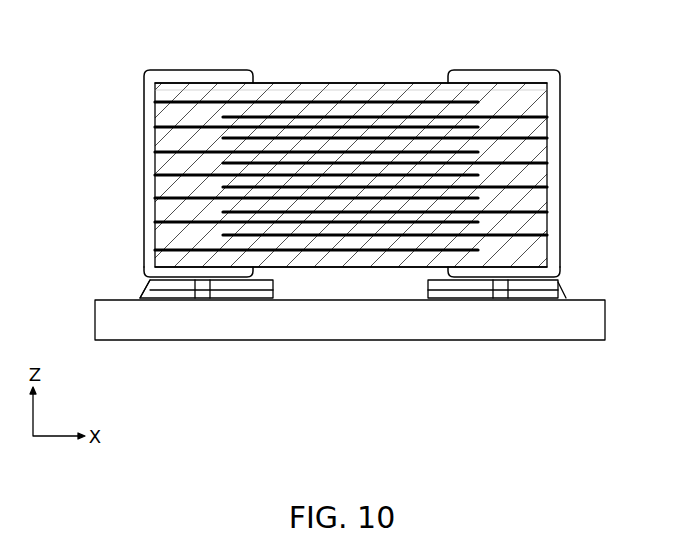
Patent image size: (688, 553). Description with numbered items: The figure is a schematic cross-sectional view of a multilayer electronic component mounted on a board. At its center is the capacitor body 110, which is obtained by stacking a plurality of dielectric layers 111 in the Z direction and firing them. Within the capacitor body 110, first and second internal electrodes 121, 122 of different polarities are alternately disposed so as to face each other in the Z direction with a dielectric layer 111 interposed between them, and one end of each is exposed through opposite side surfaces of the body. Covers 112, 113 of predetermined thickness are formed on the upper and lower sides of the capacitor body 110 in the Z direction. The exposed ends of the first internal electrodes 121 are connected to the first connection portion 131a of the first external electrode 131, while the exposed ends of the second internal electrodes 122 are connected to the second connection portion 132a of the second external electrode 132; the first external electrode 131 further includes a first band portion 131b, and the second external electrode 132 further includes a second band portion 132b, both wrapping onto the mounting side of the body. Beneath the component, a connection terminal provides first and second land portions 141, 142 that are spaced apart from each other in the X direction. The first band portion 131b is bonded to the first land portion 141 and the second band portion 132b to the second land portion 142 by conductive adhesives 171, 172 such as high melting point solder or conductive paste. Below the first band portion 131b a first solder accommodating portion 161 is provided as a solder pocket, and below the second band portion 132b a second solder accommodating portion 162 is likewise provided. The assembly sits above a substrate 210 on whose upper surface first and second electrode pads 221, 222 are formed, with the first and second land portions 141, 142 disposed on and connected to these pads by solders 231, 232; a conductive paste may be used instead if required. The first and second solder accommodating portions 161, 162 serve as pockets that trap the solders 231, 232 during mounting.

The capacitor body 110 is at (353, 86).
The dielectric layer 111 is at (522, 206).
The cover 112 is at (313, 93).
The cover 113 is at (372, 266).
The first internal electrode 121 is at (270, 100).
The second internal electrode 122 is at (415, 88).
The first external electrode 131 is at (142, 176).
The first connection portion 131a is at (146, 240).
The first band portion 131b is at (166, 272).
The second external electrode 132 is at (560, 176).
The second connection portion 132a is at (556, 241).
The second band portion 132b is at (535, 271).
The first land portion 141 is at (240, 300).
The second land portion 142 is at (460, 300).
The first solder accommodating portion 161 is at (170, 300).
The second solder accommodating portion 162 is at (520, 300).
The conductive adhesive 171 is at (190, 300).
The conductive adhesive 172 is at (497, 300).
The substrate 210 is at (578, 330).
The first electrode pad 221 is at (215, 300).
The second electrode pad 222 is at (485, 300).
The solder 231 is at (158, 300).
The solder 232 is at (565, 297).